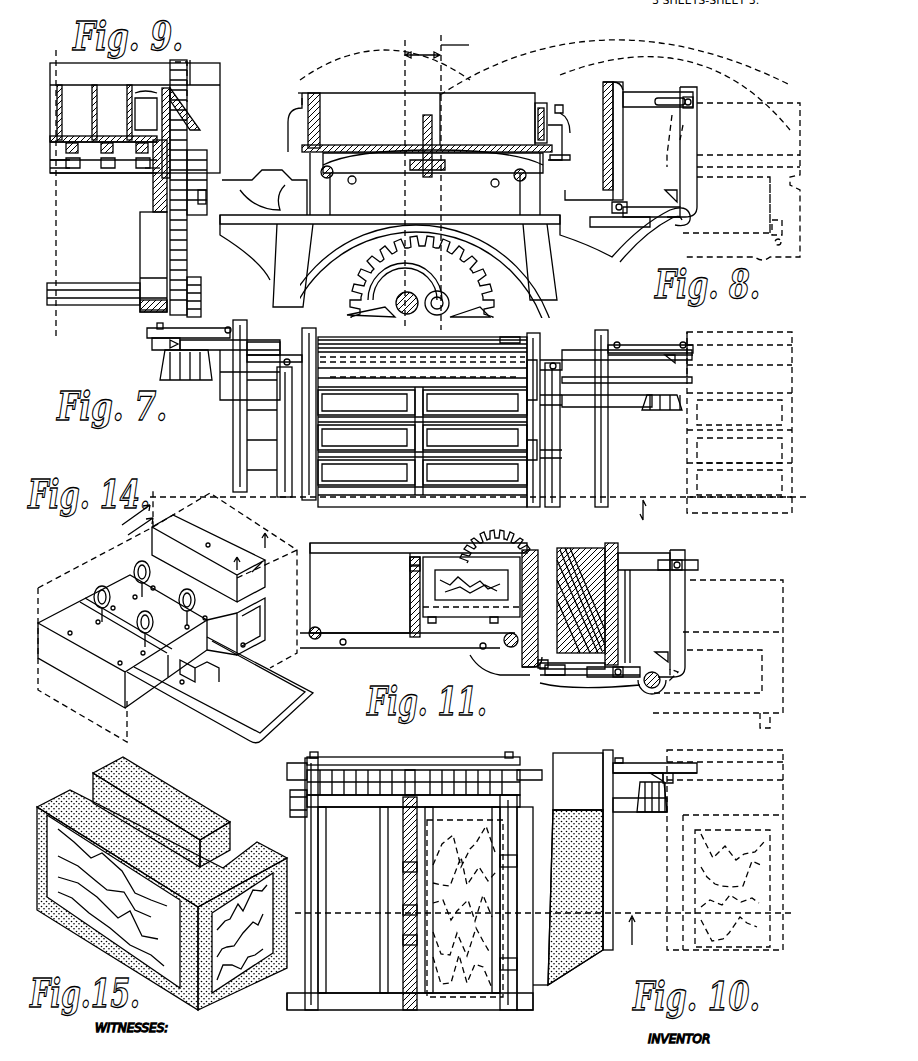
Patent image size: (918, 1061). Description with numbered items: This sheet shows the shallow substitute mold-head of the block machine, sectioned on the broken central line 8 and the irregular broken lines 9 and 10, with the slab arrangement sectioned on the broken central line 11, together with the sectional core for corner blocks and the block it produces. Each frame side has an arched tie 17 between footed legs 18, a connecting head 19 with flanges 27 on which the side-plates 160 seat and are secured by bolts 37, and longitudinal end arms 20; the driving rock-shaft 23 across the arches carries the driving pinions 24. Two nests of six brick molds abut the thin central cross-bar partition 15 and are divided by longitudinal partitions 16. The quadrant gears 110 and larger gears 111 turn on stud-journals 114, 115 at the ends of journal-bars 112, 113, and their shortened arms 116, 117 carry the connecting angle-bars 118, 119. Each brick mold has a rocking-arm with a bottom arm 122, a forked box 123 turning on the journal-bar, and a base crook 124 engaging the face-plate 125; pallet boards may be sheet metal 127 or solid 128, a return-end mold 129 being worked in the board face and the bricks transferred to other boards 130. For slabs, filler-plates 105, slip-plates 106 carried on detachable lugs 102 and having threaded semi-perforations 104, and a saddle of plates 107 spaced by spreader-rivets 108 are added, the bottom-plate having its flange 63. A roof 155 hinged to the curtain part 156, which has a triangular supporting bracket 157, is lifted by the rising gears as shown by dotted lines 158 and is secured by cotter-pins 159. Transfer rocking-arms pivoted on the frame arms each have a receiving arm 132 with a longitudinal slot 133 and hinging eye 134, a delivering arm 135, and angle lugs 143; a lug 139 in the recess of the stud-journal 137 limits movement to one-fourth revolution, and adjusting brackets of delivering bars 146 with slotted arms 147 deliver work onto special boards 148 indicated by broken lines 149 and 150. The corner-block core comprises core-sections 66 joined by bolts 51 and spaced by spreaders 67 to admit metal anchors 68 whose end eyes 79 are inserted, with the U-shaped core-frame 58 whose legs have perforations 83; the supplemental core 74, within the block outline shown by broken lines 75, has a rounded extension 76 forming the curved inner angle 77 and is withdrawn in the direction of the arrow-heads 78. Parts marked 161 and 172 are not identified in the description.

In FIG. 9, the broken central line 8 is at (56, 222).
In FIG. 7, the broken central line 8 is at (651, 499).
In FIG. 8, the irregular broken line 9 is at (448, 174).
In FIG. 8, the irregular broken line 10 is at (402, 32).
In FIG. 10, the broken central line 11 is at (346, 905).
In FIG. 8, the central cross-bar partition 15 is at (432, 130).
In FIG. 7, the central cross-bar partition 15 is at (415, 438).
In FIG. 11, the central cross-bar partition 15 is at (410, 595).
In FIG. 10, the central cross-bar partition 15 is at (403, 960).
In FIG. 9, the longitudinal partitions 16 is at (62, 105).
In FIG. 7, the longitudinal partitions 16 is at (468, 500).
In FIG. 9, the arched tie 17 is at (140, 305).
In FIG. 8, the arched tie 17 is at (382, 310).
In FIG. 8, the footed legs 18 is at (415, 265).
In FIG. 7, the footed legs 18 is at (576, 405).
In FIG. 10, the footed legs 18 is at (543, 988).
In FIG. 8, the connecting head 19 is at (345, 212).
In FIG. 10, the connecting head 19 is at (333, 1000).
In FIG. 8, the longitudinal end arms 20 is at (455, 219).
In FIG. 7, the longitudinal end arms 20 is at (626, 397).
In FIG. 10, the longitudinal end arms 20 is at (540, 1010).
In FIG. 9, the driving rock-shaft 23 is at (84, 290).
In FIG. 8, the driving rock-shaft 23 is at (439, 310).
In FIG. 9, the driving pinions 24 is at (185, 270).
In FIG. 8, the driving pinions 24 is at (360, 303).
In FIG. 9, the flanges 27 is at (152, 178).
In FIG. 8, the flanges 27 is at (380, 160).
In FIG. 8, the bolts 37 is at (355, 183).
In FIG. 11, the bolts 37 is at (343, 646).
In FIG. 14, the bolts 51 is at (186, 666).
In FIG. 14, the U-shaped core-frame 58 is at (292, 700).
In FIG. 10, the flange 63 is at (520, 980).
In FIG. 14, the core-sections 66 is at (218, 650).
In FIG. 14, the spreaders 67 is at (165, 642).
In FIG. 14, the metal anchors 68 is at (102, 622).
In FIG. 14, the supplemental core 74 is at (217, 524).
In FIG. 14, the broken lines 75 is at (250, 521).
In FIG. 14, the overlapping rounded extension 76 is at (262, 622).
In FIG. 15, the curved inner angle 77 is at (162, 883).
In FIG. 14, the arrow-heads 78 is at (197, 541).
In FIG. 14, the end eye 79 is at (144, 604).
In FIG. 14, the perforations 83 is at (217, 683).
In FIG. 11, the detachable lugs 102 is at (490, 622).
In FIG. 11, the threaded semi-perforations 104 is at (471, 590).
In FIG. 8, the filler-plates 105 is at (580, 118).
In FIG. 7, the filler-plates 105 is at (540, 478).
In FIG. 11, the filler-plates 105 is at (545, 670).
In FIG. 10, the filler-plates 105 is at (288, 806).
In FIG. 11, the slip-plates 106 is at (447, 565).
In FIG. 11, the saddle 107 is at (410, 563).
In FIG. 10, the saddle 107 is at (402, 880).
In FIG. 11, the spreader-rivets 108 is at (410, 570).
In FIG. 10, the spreader-rivets 108 is at (402, 940).
In FIG. 8, the quadrant gears 110 is at (500, 270).
In FIG. 11, the quadrant gears 110 is at (510, 545).
In FIG. 10, the quadrant gears 110 is at (517, 785).
In FIG. 8, the larger gears 111 is at (264, 192).
In FIG. 7, the larger gears 111 is at (258, 360).
In FIG. 10, the larger gears 111 is at (290, 772).
In FIG. 8, the journal-bar 112 is at (520, 181).
In FIG. 10, the journal-bar 112 is at (502, 935).
In FIG. 9, the journal-bar 113 is at (92, 168).
In FIG. 8, the journal-bar 113 is at (328, 178).
In FIG. 11, the journal-bar 113 is at (318, 630).
In FIG. 10, the journal-bar 113 is at (334, 868).
In FIG. 7, the stud-journal 114 is at (545, 350).
In FIG. 10, the stud-journal 114 is at (515, 768).
In FIG. 9, the stud-journal 115 is at (197, 167).
In FIG. 7, the stud-journal 115 is at (320, 335).
In FIG. 10, the stud-journal 115 is at (330, 748).
In FIG. 8, the arm 116 is at (562, 132).
In FIG. 7, the arm 116 is at (548, 363).
In FIG. 11, the arm 116 is at (560, 682).
In FIG. 10, the arm 116 is at (545, 790).
In FIG. 9, the arm 117 is at (236, 122).
In FIG. 8, the arm 117 is at (288, 122).
In FIG. 7, the arm 117 is at (293, 367).
In FIG. 8, the connecting angle-bar 118 is at (572, 100).
In FIG. 7, the connecting angle-bar 118 is at (540, 464).
In FIG. 11, the connecting angle-bar 118 is at (575, 680).
In FIG. 8, the connecting angle-bar 119 is at (296, 104).
In FIG. 7, the connecting angle-bar 119 is at (285, 466).
In FIG. 9, the bottom arm 122 is at (110, 136).
In FIG. 8, the bottom arm 122 is at (484, 155).
In FIG. 11, the bottom arm 122 is at (520, 575).
In FIG. 8, the forked box 123 is at (493, 186).
In FIG. 11, the forked box 123 is at (482, 644).
In FIG. 10, the forked box 123 is at (500, 858).
In FIG. 8, the base crook 124 is at (568, 155).
In FIG. 8, the face-plates 125 is at (496, 143).
In FIG. 7, the face-plates 125 is at (440, 430).
In FIG. 8, the sheet metal pallet board 127 is at (536, 103).
In FIG. 7, the sheet metal pallet board 127 is at (540, 448).
In FIG. 11, the sheet metal pallet board 127 is at (560, 682).
In FIG. 10, the sheet metal pallet board 127 is at (578, 781).
In FIG. 8, the solid pallet board 128 is at (320, 100).
In FIG. 7, the solid pallet board 128 is at (318, 465).
In FIG. 9, the return-end mold 129 is at (147, 98).
In FIG. 9, the off-bearing boards 130 is at (135, 118).
In FIG. 8, the off-bearing boards 130 is at (608, 79).
In FIG. 7, the off-bearing boards 130 is at (608, 470).
In FIG. 8, the receiving arm 132 is at (580, 230).
In FIG. 7, the receiving arm 132 is at (630, 352).
In FIG. 11, the receiving arm 132 is at (598, 683).
In FIG. 10, the receiving arm 132 is at (628, 763).
In FIG. 8, the longitudinal slot 133 is at (615, 227).
In FIG. 11, the longitudinal slot 133 is at (628, 668).
In FIG. 11, the hinging eye 134 is at (645, 690).
In FIG. 8, the delivering arm 135 is at (695, 142).
In FIG. 7, the delivering arm 135 is at (690, 374).
In FIG. 11, the delivering arm 135 is at (685, 612).
In FIG. 10, the delivering arm 135 is at (678, 780).
In FIG. 11, the stud-journal 137 is at (668, 678).
In FIG. 7, the lug 139 is at (655, 392).
In FIG. 10, the lug 139 is at (668, 790).
In FIG. 8, the angle lugs 143 is at (678, 200).
In FIG. 7, the angle lugs 143 is at (675, 355).
In FIG. 11, the angle lugs 143 is at (683, 662).
In FIG. 10, the angle lugs 143 is at (662, 773).
In FIG. 8, the delivering bars 146 is at (622, 160).
In FIG. 11, the delivering bars 146 is at (625, 621).
In FIG. 8, the slotted arms 147 is at (641, 102).
In FIG. 7, the slotted arms 147 is at (668, 345).
In FIG. 11, the slotted arms 147 is at (645, 563).
In FIG. 10, the slotted arms 147 is at (685, 763).
In FIG. 8, the special boards 148 is at (608, 136).
In FIG. 11, the special boards 148 is at (610, 545).
In FIG. 10, the special boards 148 is at (613, 876).
In FIG. 8, the broken lines 149 is at (754, 175).
In FIG. 7, the broken lines 149 is at (762, 415).
In FIG. 11, the broken lines 150 is at (757, 645).
In FIG. 10, the broken lines 150 is at (725, 850).
In FIG. 9, the roof 155 is at (198, 100).
In FIG. 7, the roof 155 is at (430, 368).
In FIG. 10, the roof 155 is at (400, 768).
In FIG. 9, the curtain part 156 is at (195, 140).
In FIG. 9, the triangular supporting bracket 157 is at (190, 70).
In FIG. 10, the triangular supporting bracket 157 is at (420, 775).
In FIG. 9, the dotted lines 158 is at (195, 82).
In FIG. 9, the cotter-pins 159 is at (211, 190).
In FIG. 7, the cotter-pins 159 is at (530, 337).
In FIG. 10, the cotter-pins 159 is at (540, 768).
In FIG. 9, the side-plates 160 is at (158, 170).
In FIG. 7, the side-plates 160 is at (477, 387).
In FIG. 11, the side-plates 160 is at (385, 648).
In FIG. 10, the side-plates 160 is at (455, 1012).
In FIG. 11, the sand 161 is at (581, 593).
In FIG. 10, the sand 161 is at (575, 897).
In FIG. 11, the link 172 is at (475, 660).